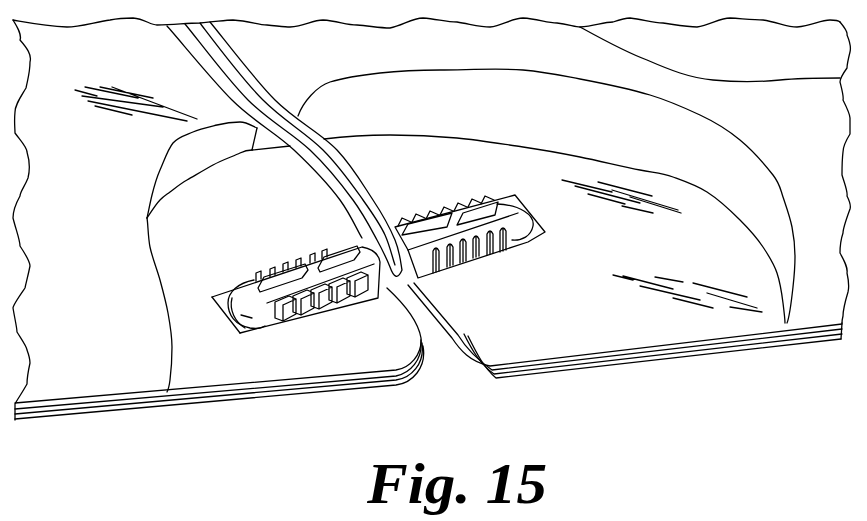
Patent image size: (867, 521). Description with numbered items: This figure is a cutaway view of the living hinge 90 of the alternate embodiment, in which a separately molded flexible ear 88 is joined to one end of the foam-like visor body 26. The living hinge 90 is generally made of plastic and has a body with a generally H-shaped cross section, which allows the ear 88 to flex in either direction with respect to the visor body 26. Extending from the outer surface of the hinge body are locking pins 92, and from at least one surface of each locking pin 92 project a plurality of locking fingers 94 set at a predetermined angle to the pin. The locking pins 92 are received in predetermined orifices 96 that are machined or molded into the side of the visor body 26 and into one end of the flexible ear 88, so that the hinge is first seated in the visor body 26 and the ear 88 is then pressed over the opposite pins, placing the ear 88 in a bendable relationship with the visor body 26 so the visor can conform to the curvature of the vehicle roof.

The visor body 26 is at (653, 320).
The flexible ear 88 is at (297, 362).
The living hinge 90 is at (348, 182).
The locking pin 92 is at (522, 213).
The locking fingers 94 is at (343, 308).
The orifices 96 is at (228, 292).